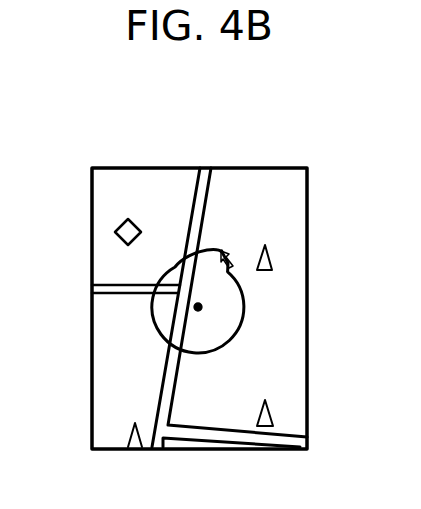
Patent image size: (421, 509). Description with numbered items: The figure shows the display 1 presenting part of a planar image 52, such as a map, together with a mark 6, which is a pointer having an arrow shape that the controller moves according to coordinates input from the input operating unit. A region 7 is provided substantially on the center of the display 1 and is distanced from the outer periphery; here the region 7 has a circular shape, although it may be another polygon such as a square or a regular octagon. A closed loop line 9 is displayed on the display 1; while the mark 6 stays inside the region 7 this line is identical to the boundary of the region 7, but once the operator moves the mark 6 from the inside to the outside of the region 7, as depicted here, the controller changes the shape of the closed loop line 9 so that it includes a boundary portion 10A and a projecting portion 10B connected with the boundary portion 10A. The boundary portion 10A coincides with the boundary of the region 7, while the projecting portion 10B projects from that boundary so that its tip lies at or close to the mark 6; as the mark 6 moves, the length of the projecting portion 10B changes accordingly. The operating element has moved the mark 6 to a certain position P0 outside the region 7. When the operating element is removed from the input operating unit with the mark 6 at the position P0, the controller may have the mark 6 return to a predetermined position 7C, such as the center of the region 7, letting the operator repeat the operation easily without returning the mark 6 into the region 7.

The display 1 is at (120, 172).
The closed loop line 9 is at (223, 251).
The boundary portion 10A is at (165, 254).
The projecting portion 10B is at (215, 250).
The position P0 is at (223, 250).
The mark 6 is at (227, 257).
The region 7 is at (218, 328).
The predetermined position 7C is at (198, 311).
The planar image 52 is at (117, 412).